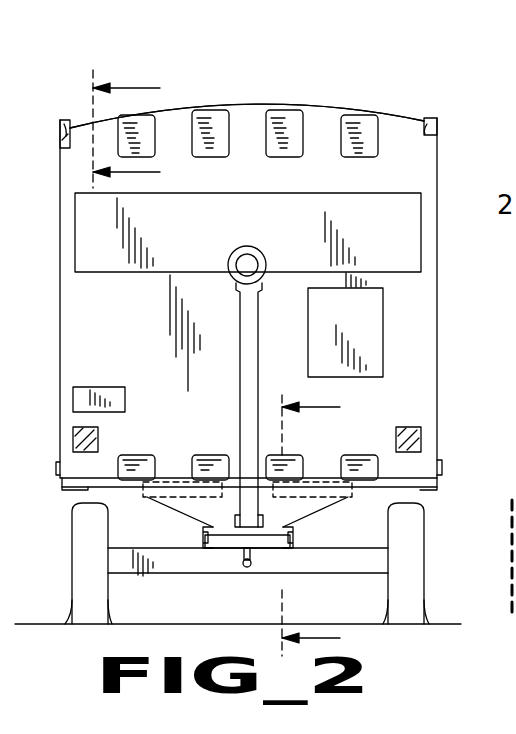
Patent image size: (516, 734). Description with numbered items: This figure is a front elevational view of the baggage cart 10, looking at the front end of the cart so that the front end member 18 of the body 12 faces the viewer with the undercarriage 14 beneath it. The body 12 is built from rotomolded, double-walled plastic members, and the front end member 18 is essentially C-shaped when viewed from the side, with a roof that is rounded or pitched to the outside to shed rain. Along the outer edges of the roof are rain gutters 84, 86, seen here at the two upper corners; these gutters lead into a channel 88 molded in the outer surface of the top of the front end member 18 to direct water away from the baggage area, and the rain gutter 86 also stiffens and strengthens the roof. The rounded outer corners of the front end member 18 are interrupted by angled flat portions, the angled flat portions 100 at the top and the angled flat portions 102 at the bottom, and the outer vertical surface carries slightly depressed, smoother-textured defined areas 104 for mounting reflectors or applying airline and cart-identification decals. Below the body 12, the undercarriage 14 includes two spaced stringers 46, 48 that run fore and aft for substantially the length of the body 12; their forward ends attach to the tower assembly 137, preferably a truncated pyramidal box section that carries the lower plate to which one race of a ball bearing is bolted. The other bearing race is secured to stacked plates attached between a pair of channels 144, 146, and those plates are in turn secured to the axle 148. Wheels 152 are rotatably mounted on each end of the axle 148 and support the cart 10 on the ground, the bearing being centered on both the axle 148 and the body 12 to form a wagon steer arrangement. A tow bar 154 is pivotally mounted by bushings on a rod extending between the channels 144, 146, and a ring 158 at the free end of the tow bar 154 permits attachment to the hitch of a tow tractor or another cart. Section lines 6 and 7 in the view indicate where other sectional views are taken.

The baggage cart 10 is at (288, 76).
The body 12 is at (229, 103).
The undercarriage 14 is at (368, 490).
The front end member 18 is at (422, 182).
The stringer 46 is at (415, 478).
The stringer 48 is at (74, 485).
The rain gutter 84 is at (427, 124).
The rain gutter 86 is at (66, 128).
The channel 88 is at (67, 140).
The angled flat portion 100 is at (343, 150).
The angled flat portion 102 is at (348, 458).
The defined area 104 is at (299, 266).
The tower assembly 137 is at (223, 515).
The channel 144 is at (293, 538).
The channel 146 is at (203, 540).
The axle 148 is at (280, 564).
The wheels 152 is at (108, 602).
The tow bar 154 is at (240, 300).
The ring 158 is at (240, 248).
The section line 6- 6 is at (139, 130).
The section line 7- 7 is at (323, 524).